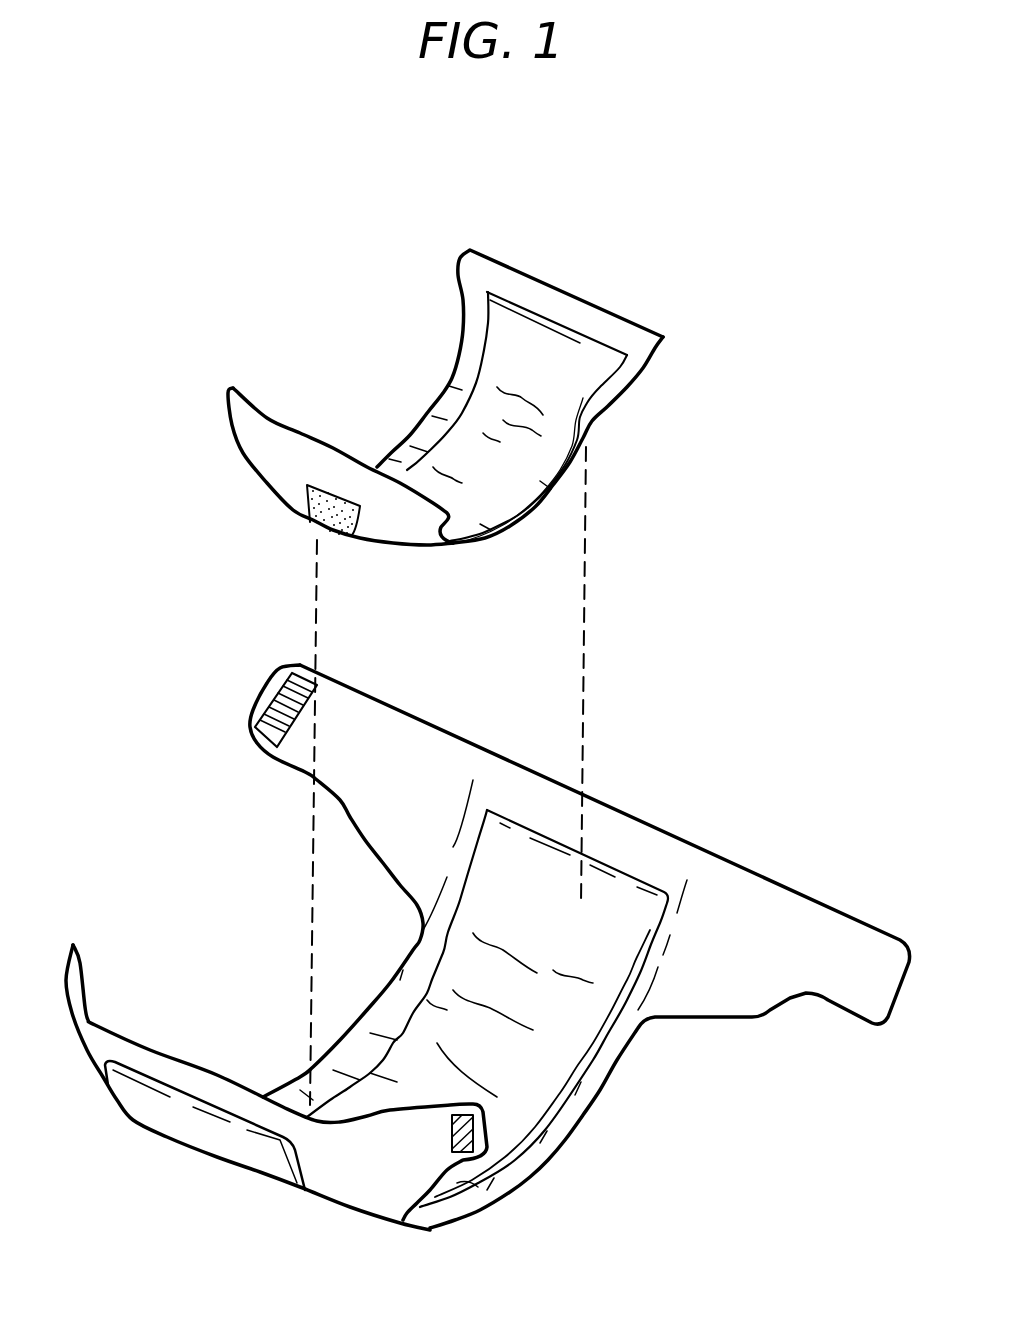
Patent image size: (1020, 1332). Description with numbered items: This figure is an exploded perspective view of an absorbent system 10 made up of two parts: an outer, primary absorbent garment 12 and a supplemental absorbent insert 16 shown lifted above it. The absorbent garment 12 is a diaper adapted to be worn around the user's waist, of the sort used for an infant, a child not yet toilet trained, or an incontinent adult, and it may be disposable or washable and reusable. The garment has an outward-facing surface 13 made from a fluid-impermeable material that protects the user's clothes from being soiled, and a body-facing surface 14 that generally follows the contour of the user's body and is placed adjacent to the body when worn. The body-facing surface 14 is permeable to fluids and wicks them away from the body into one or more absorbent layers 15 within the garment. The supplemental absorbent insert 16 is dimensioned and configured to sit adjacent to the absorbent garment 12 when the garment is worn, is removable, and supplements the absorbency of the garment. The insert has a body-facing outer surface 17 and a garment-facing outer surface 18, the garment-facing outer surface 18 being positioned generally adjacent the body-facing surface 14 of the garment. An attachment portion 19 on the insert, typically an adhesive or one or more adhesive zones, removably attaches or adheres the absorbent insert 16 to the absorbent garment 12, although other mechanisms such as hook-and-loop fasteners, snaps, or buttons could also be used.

The absorbent system 10 is at (190, 262).
The absorbent garment 12 is at (618, 1073).
The outward-facing surface 13 is at (230, 1150).
The body-facing surface 14 is at (398, 1007).
The absorbent layers 15 is at (520, 1103).
The supplemental absorbent insert 16 is at (624, 412).
The body-facing outer surface 17 is at (512, 350).
The garment-facing outer surface 18 is at (392, 548).
The attachment portion 19 is at (310, 525).